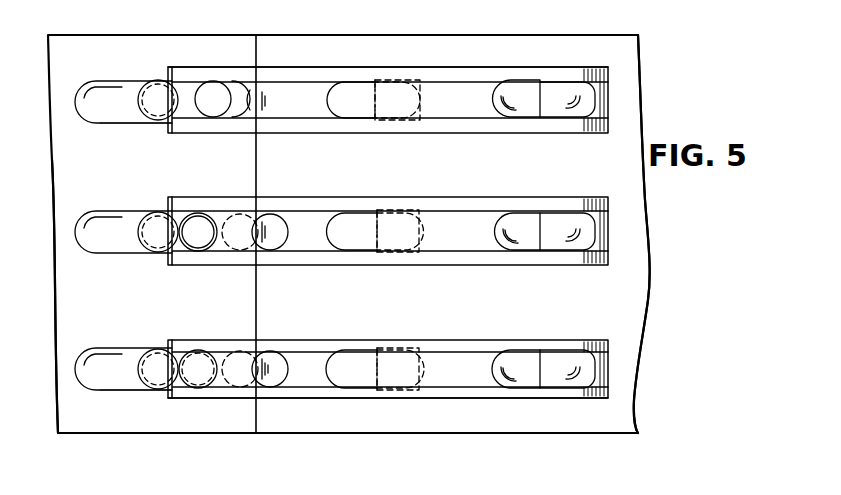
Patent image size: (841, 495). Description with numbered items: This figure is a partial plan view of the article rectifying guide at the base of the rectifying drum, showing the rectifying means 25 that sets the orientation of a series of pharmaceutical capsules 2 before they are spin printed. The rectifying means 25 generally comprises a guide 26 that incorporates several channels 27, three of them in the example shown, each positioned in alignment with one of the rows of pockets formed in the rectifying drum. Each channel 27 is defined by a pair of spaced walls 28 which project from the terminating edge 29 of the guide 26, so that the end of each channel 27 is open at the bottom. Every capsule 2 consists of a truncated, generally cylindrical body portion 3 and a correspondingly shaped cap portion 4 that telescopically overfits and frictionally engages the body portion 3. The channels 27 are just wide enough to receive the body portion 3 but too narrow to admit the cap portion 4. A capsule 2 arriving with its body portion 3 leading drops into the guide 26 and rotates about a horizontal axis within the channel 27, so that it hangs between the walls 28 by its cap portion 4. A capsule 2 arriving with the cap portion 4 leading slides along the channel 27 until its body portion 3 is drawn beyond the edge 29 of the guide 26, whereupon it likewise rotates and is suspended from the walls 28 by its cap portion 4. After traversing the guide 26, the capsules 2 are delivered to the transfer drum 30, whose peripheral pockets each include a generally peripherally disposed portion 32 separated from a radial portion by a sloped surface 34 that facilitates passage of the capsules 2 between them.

The capsule 2 is at (396, 211).
The body portion 3 is at (258, 67).
The cap portion 4 is at (158, 80).
The rectifying means 25 is at (618, 313).
The guide 26 is at (444, 52).
The channel 27 is at (516, 65).
The wall 28 is at (344, 67).
The terminating edge 29 is at (255, 52).
The transfer drum 30 is at (62, 118).
The peripherally disposed portion 32 is at (92, 88).
The sloped surface 34 is at (125, 113).